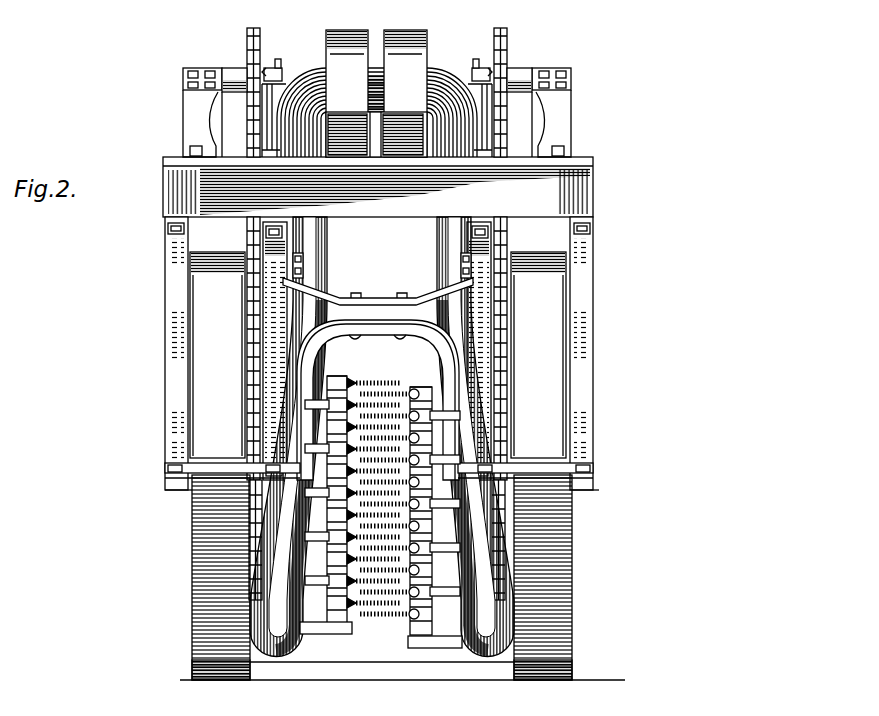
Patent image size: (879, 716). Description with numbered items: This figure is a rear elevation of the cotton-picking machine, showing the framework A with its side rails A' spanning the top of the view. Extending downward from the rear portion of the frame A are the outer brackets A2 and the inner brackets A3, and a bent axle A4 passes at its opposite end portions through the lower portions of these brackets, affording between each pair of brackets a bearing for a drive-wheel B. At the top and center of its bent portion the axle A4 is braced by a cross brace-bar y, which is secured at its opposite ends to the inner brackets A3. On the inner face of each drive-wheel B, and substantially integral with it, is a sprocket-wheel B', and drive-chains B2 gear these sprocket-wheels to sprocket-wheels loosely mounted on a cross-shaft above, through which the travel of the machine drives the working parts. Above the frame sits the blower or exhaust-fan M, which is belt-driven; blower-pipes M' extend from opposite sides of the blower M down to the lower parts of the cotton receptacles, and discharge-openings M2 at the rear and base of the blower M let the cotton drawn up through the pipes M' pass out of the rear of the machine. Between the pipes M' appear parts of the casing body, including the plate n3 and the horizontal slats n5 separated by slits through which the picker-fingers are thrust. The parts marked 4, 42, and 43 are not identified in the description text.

The framework A is at (395, 187).
The side rails A' is at (353, 191).
The outer brackets A2 is at (615, 372).
The inner brackets A3 is at (520, 351).
The bent axle A4 is at (372, 332).
The drive-wheel B is at (390, 577).
The sprocket-wheel B' is at (377, 460).
The drive-chains B2 is at (522, 236).
The blower M is at (377, 81).
The blower-pipes M' is at (378, 437).
The discharge-openings M2 is at (333, 125).
The brackets 4 is at (205, 113).
The upper bolts 42 is at (530, 46).
The clamps 43 is at (287, 68).
The cross brace-bar y is at (332, 302).
The horizontal slats n5 is at (318, 630).
The plate n3 is at (447, 641).